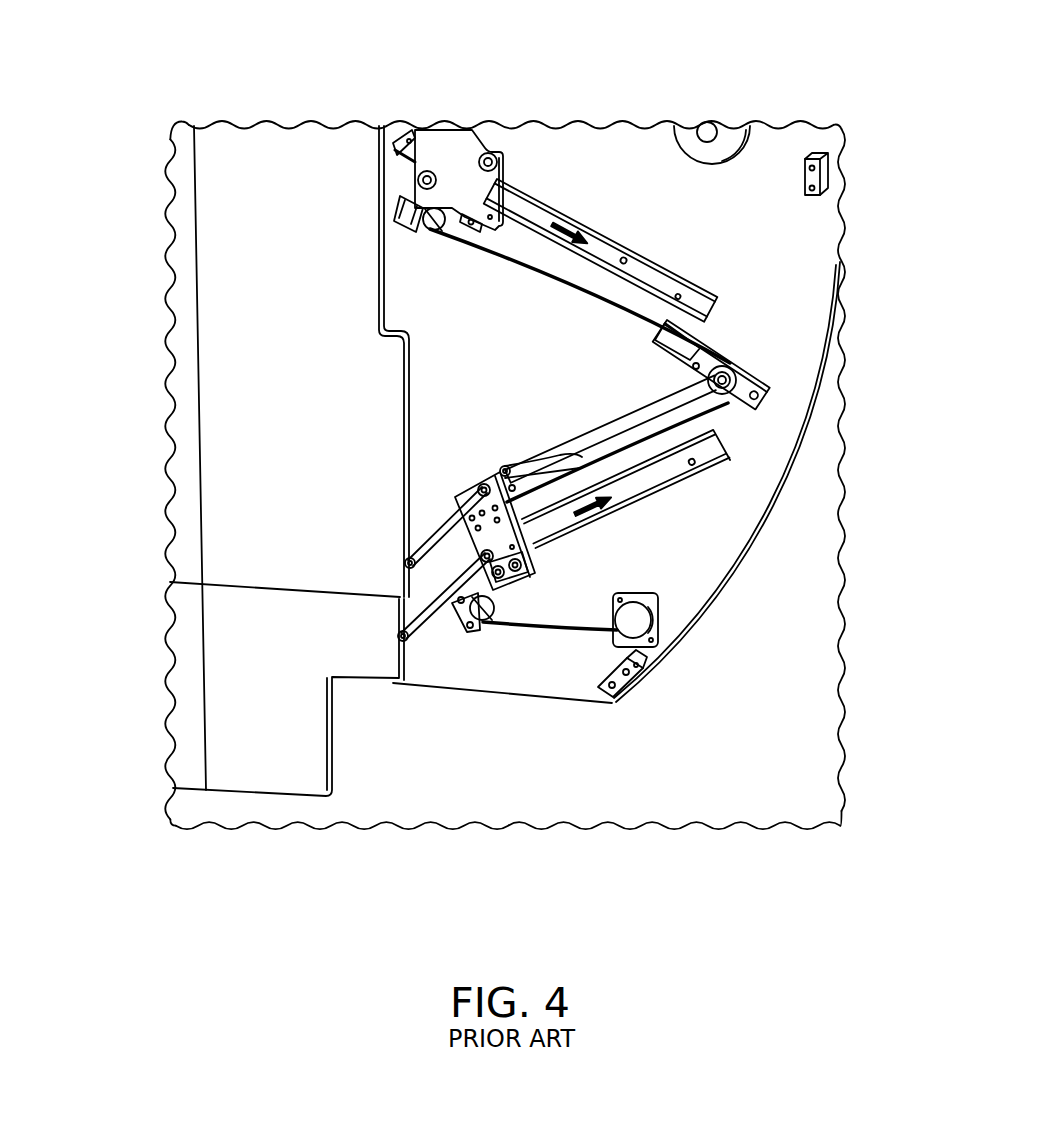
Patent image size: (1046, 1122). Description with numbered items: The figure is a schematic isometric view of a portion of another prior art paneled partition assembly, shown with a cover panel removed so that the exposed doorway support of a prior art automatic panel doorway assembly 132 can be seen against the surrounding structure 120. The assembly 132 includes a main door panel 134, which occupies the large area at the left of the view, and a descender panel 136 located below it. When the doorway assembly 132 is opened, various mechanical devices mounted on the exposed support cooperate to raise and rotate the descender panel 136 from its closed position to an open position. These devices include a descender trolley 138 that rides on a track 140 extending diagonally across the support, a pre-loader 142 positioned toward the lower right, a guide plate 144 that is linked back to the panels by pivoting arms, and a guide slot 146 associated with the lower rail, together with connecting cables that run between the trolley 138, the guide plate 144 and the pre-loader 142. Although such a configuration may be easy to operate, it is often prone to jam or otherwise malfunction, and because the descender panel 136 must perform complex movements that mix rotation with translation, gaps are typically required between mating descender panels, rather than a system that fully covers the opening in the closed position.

The chassis 120 is at (812, 243).
The automatic panel doorway assembly 132 is at (311, 103).
The main door panel 134 is at (220, 403).
The descender panel 136 is at (237, 692).
The descender trolley 138 is at (443, 140).
The track 140 is at (640, 262).
The pre-loader 142 is at (637, 610).
The guide plate 144 is at (488, 537).
The guide slot 146 is at (530, 470).